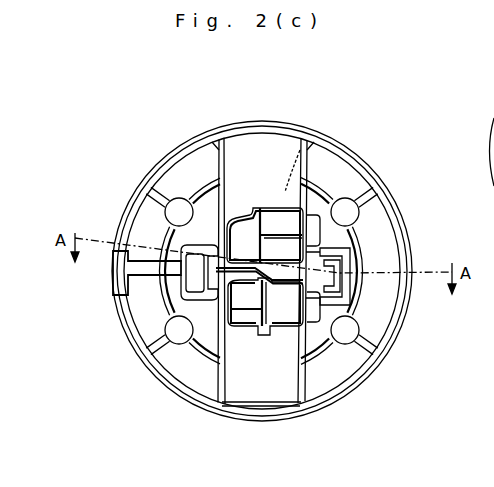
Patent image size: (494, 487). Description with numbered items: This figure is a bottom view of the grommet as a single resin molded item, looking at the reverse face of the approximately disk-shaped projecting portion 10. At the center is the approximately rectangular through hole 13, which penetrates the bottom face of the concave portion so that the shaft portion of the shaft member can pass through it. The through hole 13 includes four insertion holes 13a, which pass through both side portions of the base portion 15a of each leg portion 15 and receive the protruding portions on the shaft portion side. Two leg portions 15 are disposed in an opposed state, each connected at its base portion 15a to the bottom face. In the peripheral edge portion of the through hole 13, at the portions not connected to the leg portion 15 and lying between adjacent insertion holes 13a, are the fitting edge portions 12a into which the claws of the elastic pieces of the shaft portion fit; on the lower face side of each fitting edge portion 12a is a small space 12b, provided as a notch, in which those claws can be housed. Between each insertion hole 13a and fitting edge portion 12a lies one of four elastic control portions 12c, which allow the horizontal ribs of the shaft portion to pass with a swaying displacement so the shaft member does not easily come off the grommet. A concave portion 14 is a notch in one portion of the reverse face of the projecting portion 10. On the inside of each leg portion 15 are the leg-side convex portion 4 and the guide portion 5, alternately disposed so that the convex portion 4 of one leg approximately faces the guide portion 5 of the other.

The projecting portion 10 is at (282, 121).
The leg portion 15 is at (246, 203).
The base portion of the leg portion 15a is at (300, 150).
The insertion hole 13a is at (197, 180).
The through hole 13 is at (212, 352).
The elastic control portion 12c is at (178, 212).
The concave portion 14 is at (160, 207).
The guide portion 5 is at (186, 245).
The fitting edge portion 12a is at (335, 240).
The small space 12b is at (345, 260).
The leg-side convex portion 4 is at (340, 268).